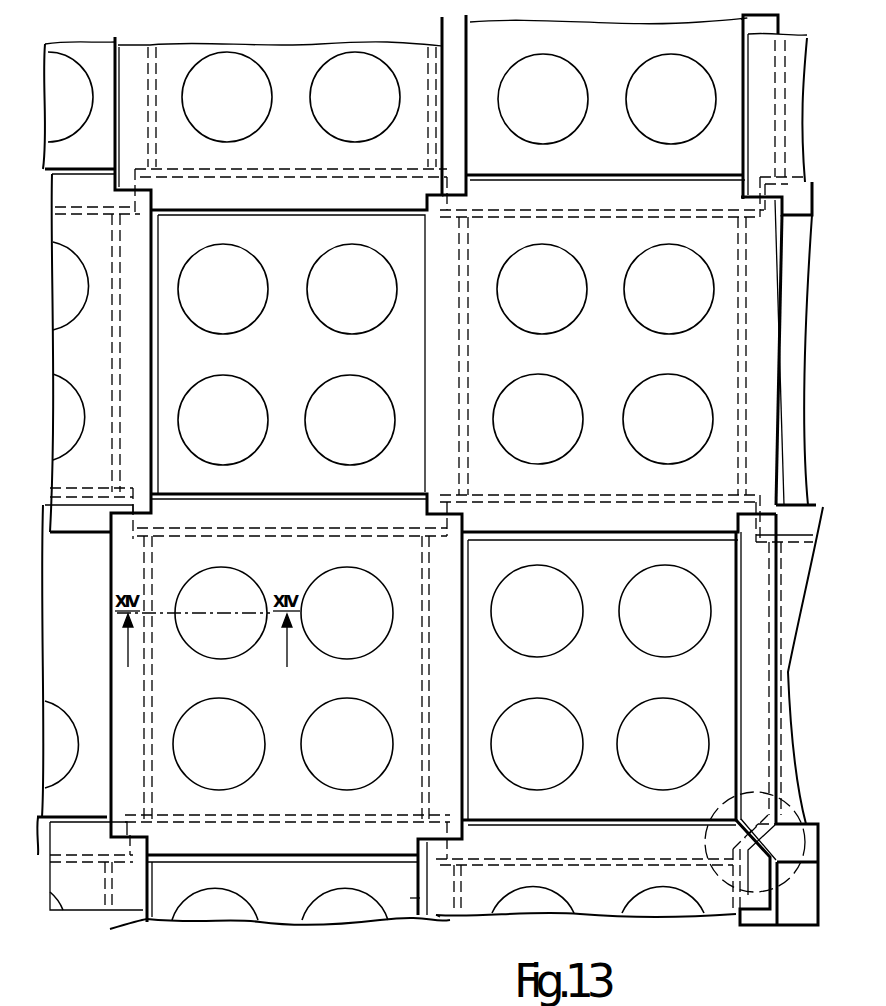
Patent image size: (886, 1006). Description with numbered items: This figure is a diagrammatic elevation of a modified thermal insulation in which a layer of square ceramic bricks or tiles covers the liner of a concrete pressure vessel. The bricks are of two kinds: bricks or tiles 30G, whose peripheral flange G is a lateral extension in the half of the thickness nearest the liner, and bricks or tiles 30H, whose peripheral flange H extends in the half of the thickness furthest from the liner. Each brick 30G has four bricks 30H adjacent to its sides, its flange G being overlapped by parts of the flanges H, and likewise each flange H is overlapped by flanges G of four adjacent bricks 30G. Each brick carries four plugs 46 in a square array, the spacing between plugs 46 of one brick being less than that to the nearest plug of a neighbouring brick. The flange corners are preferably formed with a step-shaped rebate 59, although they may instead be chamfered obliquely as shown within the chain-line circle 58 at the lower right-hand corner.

The bricks or tiles 30G is at (640, 58).
The bricks or tiles 30H is at (316, 153).
The plugs 46 is at (213, 381).
The step-shaped rebate 59 is at (428, 493).
The chain-line circle 58 is at (714, 880).
The peripheral flange H is at (415, 897).
The peripheral flange G is at (441, 916).